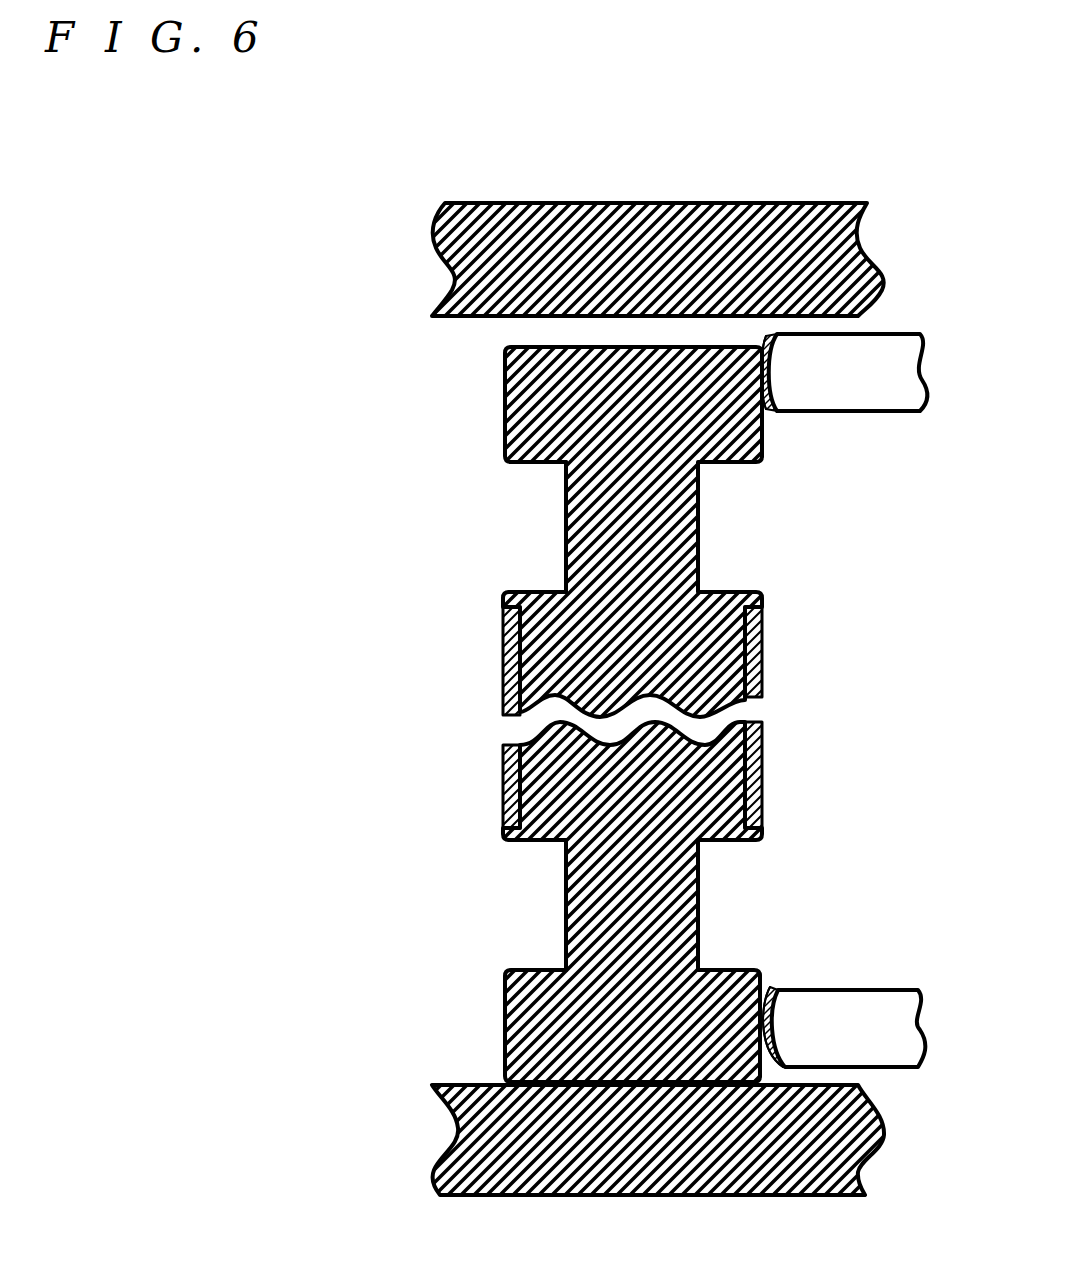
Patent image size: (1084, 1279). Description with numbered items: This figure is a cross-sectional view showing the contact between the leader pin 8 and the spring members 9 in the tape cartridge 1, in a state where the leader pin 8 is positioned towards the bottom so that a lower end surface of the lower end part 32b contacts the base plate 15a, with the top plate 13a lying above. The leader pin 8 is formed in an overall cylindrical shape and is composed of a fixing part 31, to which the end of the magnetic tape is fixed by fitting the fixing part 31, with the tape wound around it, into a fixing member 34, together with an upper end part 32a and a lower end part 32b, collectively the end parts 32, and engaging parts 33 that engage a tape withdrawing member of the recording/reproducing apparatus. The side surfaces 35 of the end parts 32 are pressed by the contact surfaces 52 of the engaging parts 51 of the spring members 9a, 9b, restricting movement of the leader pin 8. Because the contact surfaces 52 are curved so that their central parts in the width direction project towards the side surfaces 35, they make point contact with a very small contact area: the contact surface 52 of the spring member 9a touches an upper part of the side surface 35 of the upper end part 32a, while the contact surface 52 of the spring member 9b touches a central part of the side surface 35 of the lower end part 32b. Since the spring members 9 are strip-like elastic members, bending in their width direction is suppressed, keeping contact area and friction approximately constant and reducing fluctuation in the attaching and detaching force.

The tape cartridge 1 is at (292, 227).
The leader pin 8 is at (527, 714).
The spring members 9 is at (860, 700).
The spring member 9a is at (900, 412).
The spring member 9b is at (898, 990).
The top plate 13a is at (457, 268).
The base plate 15a is at (457, 1128).
The fixing part 31 is at (522, 593).
The end parts 32 is at (535, 714).
The upper end part 32a is at (505, 402).
The lower end part 32b is at (505, 1033).
The engaging parts 33 is at (566, 532).
The fixing member 34 is at (510, 780).
The side surfaces 35 is at (768, 431).
The engaging parts 51 is at (774, 375).
The contact surfaces 52 is at (766, 392).